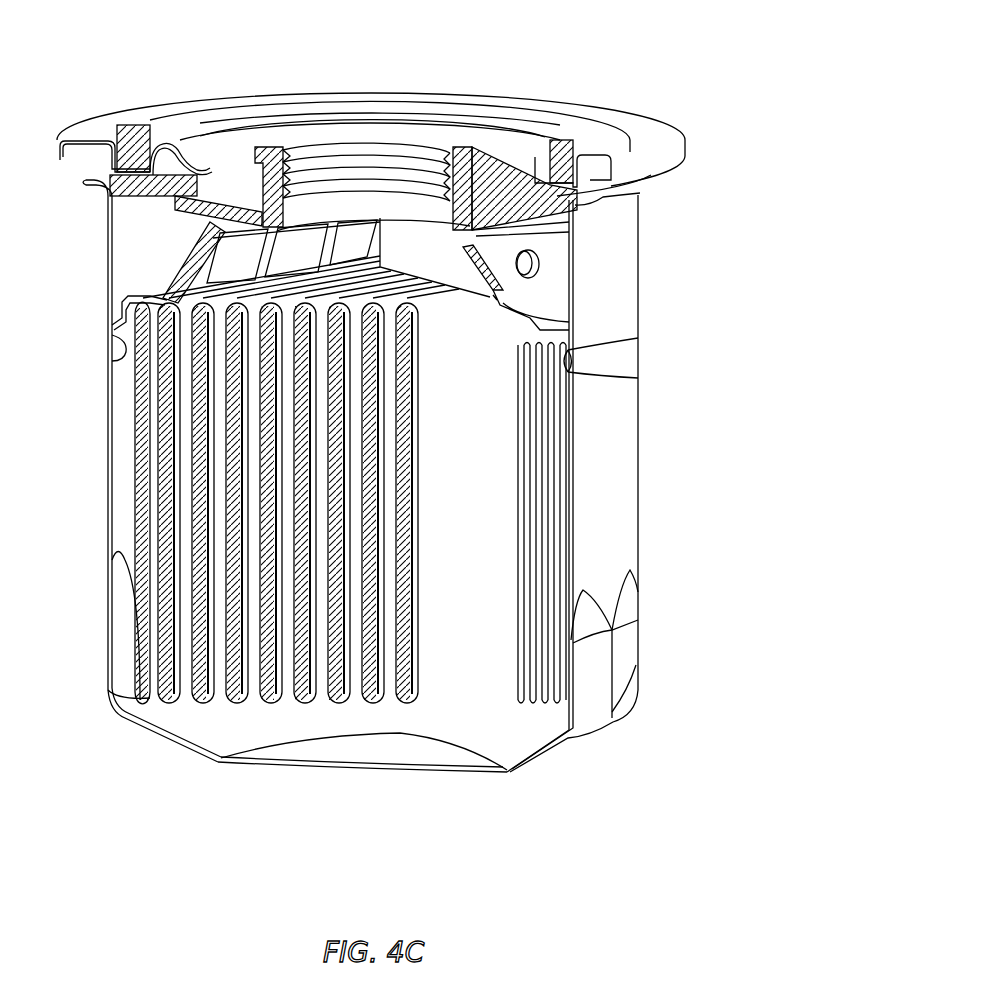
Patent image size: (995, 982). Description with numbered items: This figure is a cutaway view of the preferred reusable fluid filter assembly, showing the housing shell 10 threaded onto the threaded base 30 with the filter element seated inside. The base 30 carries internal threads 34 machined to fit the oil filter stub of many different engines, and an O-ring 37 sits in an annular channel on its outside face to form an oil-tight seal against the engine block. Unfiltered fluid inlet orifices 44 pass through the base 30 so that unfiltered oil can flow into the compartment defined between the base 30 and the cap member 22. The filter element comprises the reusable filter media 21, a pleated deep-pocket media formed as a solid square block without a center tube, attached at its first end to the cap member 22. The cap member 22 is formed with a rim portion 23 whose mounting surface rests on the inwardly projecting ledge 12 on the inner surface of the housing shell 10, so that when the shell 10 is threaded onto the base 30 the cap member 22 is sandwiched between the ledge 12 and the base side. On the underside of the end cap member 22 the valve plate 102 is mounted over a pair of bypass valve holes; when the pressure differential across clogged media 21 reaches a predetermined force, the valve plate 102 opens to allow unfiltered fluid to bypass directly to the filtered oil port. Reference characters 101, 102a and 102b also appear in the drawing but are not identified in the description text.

The housing shell 10 is at (362, 476).
The ledge 12 is at (124, 350).
The filter media 21 is at (180, 487).
The cap member 22 is at (610, 276).
The rim portion 23 is at (120, 327).
The threaded base 30 is at (394, 137).
The internal threads 34 is at (383, 143).
The O-ring 37 is at (607, 113).
The unfiltered fluid inlet orifices 44 is at (232, 162).
The cap body 101 is at (343, 153).
The valve plate 102 is at (358, 242).
The aperture 102a is at (541, 264).
The aperture 102b is at (636, 272).